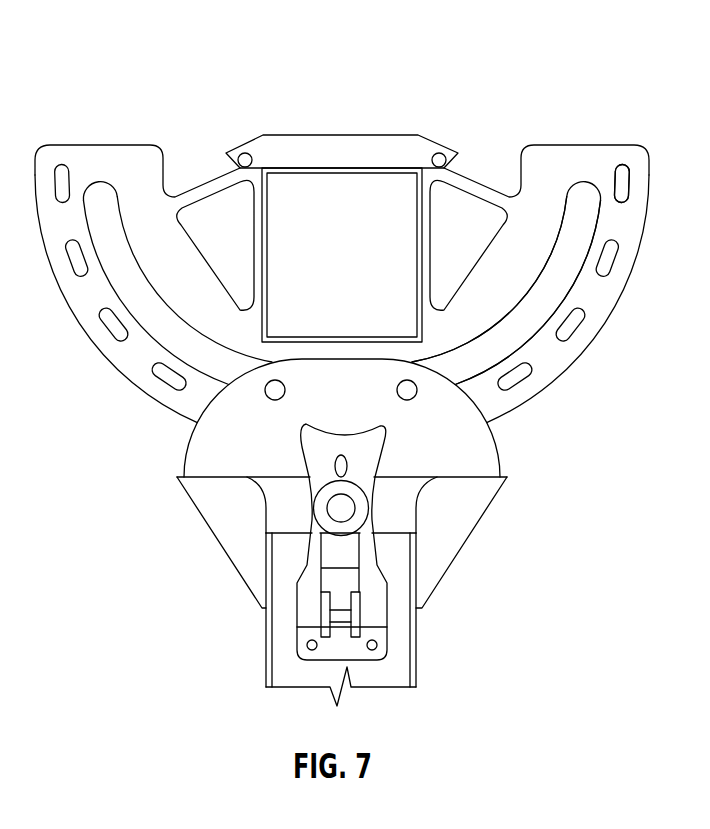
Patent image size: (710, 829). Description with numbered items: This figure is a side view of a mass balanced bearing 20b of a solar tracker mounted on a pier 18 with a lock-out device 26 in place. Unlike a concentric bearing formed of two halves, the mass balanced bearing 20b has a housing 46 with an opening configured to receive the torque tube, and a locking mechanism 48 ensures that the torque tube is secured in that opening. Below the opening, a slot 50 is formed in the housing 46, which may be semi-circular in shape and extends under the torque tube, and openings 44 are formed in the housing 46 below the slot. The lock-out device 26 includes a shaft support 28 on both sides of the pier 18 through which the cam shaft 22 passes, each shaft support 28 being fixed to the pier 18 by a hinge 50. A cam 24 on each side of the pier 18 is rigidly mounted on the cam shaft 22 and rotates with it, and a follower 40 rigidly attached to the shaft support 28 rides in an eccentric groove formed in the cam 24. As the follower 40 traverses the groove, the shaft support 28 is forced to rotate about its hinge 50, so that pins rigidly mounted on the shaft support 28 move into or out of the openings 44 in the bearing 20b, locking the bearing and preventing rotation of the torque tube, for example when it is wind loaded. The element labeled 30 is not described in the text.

The mass balanced bearing 20b is at (505, 76).
The pier 18 is at (417, 642).
The cam shaft 22 is at (343, 510).
The cam 24 is at (313, 505).
The lock-out device 26 is at (378, 462).
The shaft support 28 is at (472, 453).
The bracket 30 is at (482, 521).
The follower 40 is at (338, 466).
The opening 44 is at (628, 178).
The housing 46 is at (588, 144).
The locking mechanism 48 is at (384, 134).
The hinge 50 is at (572, 248).